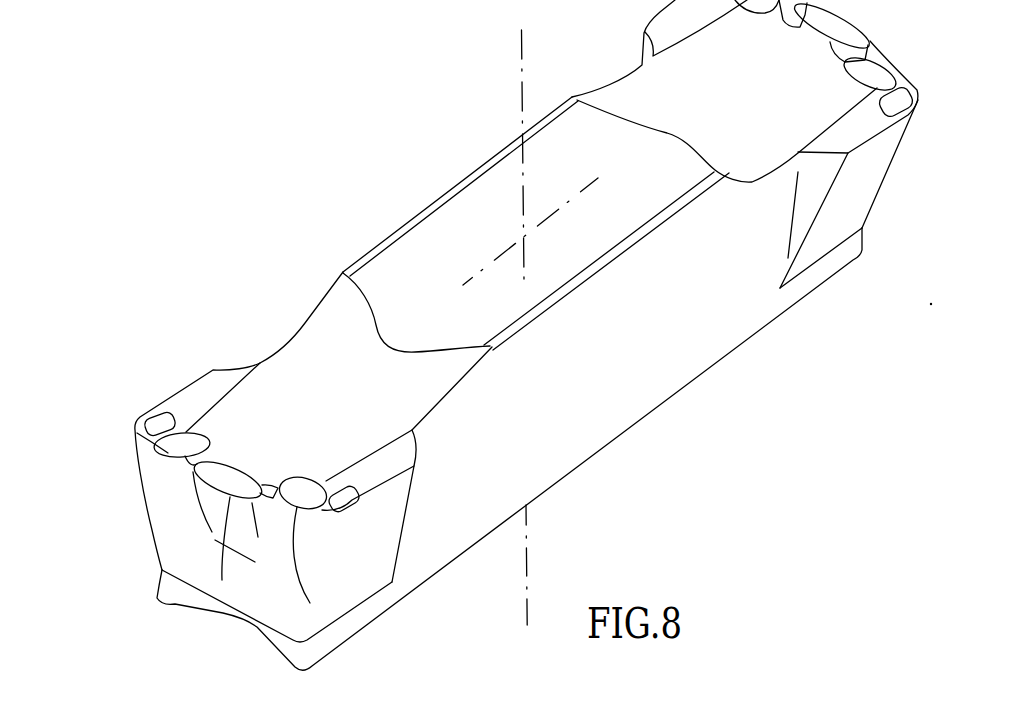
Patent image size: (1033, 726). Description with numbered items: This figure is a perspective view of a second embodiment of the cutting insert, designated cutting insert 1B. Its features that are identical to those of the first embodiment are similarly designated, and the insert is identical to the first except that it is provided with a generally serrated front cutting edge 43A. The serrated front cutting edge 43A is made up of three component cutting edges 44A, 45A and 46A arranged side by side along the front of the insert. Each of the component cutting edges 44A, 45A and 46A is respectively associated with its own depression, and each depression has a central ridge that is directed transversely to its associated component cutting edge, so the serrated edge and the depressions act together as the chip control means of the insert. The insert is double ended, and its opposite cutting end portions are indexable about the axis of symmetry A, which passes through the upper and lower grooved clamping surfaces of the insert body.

The cutting insert 1B is at (627, 380).
The serrated front cutting edge 43A is at (191, 492).
The component cutting edge 44A is at (222, 580).
The component cutting edge 45A is at (162, 453).
The component cutting edge 46A is at (310, 603).
The axis of symmetry A is at (523, 93).